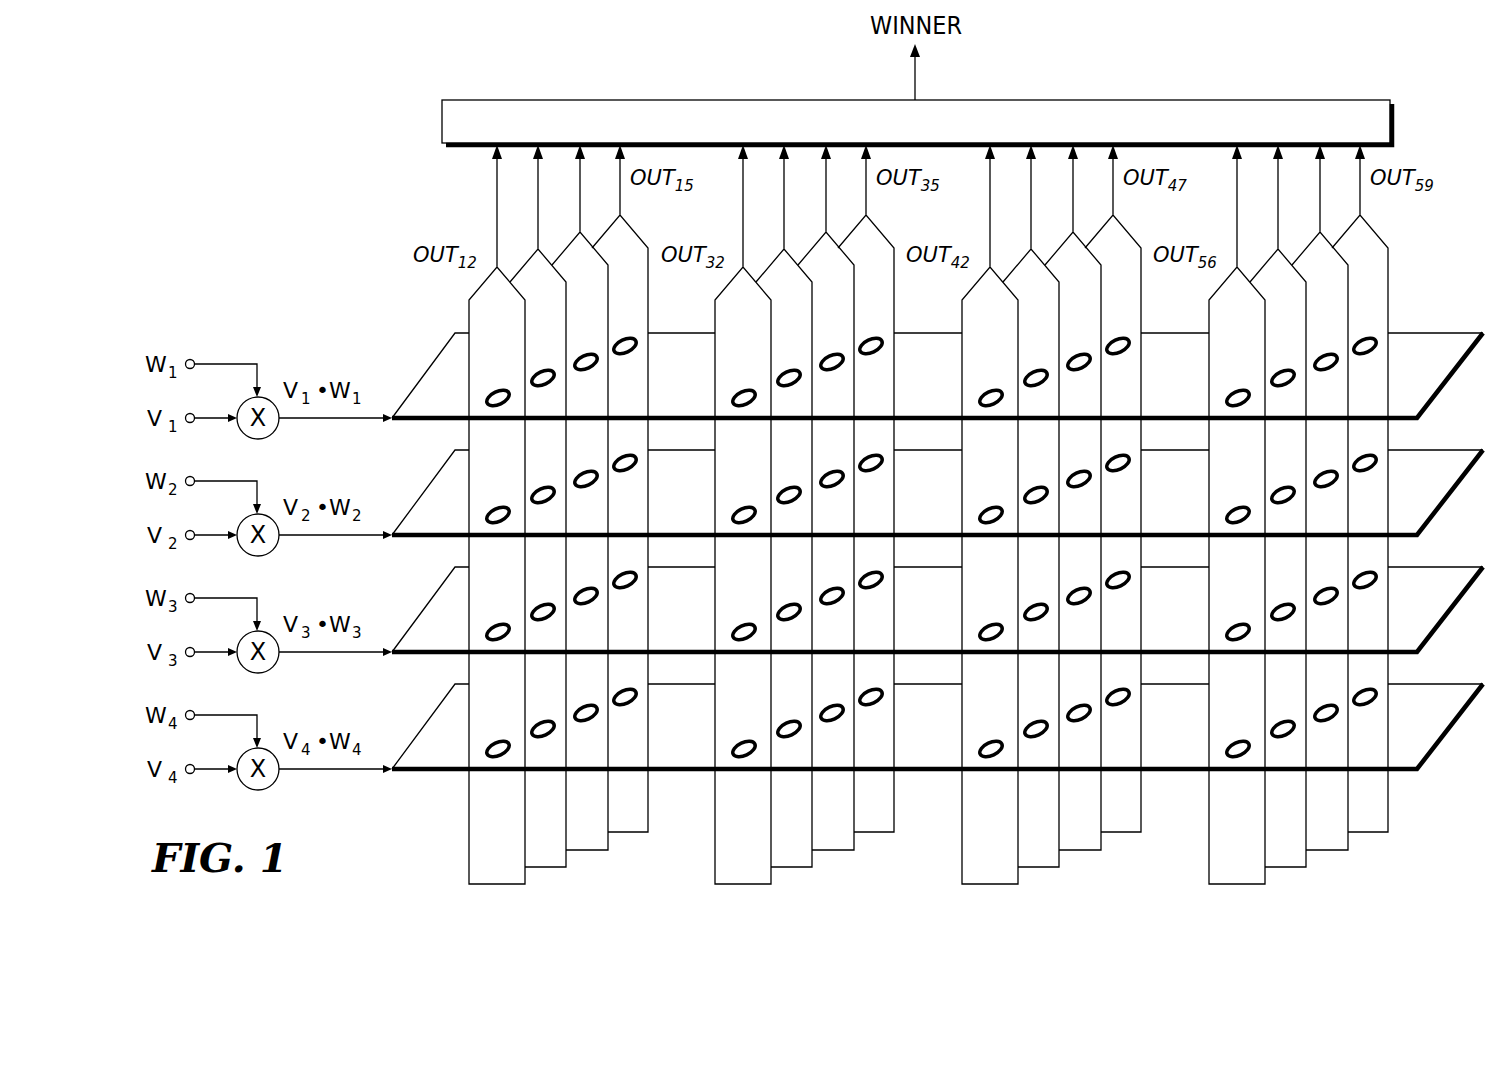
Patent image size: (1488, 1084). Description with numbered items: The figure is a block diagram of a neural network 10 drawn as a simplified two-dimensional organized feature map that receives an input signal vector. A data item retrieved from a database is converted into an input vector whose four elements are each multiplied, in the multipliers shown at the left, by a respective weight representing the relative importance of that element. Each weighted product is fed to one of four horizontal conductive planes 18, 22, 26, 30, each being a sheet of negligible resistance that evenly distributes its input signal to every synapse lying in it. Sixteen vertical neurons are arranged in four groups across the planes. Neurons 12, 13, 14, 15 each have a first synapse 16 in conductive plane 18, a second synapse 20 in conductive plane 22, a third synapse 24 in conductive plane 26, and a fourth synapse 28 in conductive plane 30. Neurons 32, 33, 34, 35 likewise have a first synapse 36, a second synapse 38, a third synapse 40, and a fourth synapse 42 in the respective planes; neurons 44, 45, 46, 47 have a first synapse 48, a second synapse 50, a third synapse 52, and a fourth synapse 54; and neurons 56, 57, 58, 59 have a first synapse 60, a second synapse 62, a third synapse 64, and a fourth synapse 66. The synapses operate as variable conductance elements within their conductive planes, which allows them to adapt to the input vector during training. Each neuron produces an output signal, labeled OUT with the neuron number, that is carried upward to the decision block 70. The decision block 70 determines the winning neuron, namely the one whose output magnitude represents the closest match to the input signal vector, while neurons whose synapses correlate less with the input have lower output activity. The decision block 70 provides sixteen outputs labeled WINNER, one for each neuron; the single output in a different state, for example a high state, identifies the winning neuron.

The neural network 10 is at (408, 849).
The neuron 12 is at (506, 886).
The neuron 13 is at (540, 868).
The neuron 14 is at (582, 851).
The neuron 15 is at (622, 833).
The first synapse 16 is at (915, 88).
The conductive plane 18 is at (1467, 365).
The second synapse 20 is at (559, 489).
The conductive plane 22 is at (937, 492).
The third synapse 24 is at (559, 606).
The conductive plane 26 is at (937, 609).
The fourth synapse 28 is at (559, 723).
The conductive plane 30 is at (937, 726).
The neuron 32 is at (740, 531).
The neuron 33 is at (787, 527).
The neuron 34 is at (829, 519).
The neuron 35 is at (869, 510).
The first synapse 36 is at (806, 352).
The second synapse 38 is at (805, 489).
The third synapse 40 is at (805, 606).
The fourth synapse 42 is at (805, 723).
The neuron 44 is at (987, 531).
The neuron 45 is at (1034, 527).
The neuron 46 is at (1076, 519).
The neuron 47 is at (1117, 510).
The first synapse 48 is at (1053, 352).
The second synapse 50 is at (1052, 489).
The third synapse 52 is at (1052, 606).
The fourth synapse 54 is at (1052, 723).
The neuron 56 is at (1234, 531).
The neuron 57 is at (1282, 527).
The neuron 58 is at (1323, 519).
The neuron 59 is at (1363, 510).
The first synapse 60 is at (1300, 352).
The second synapse 62 is at (1299, 489).
The third synapse 64 is at (1299, 606).
The fourth synapse 66 is at (1299, 723).
The decision block 70 is at (1193, 98).